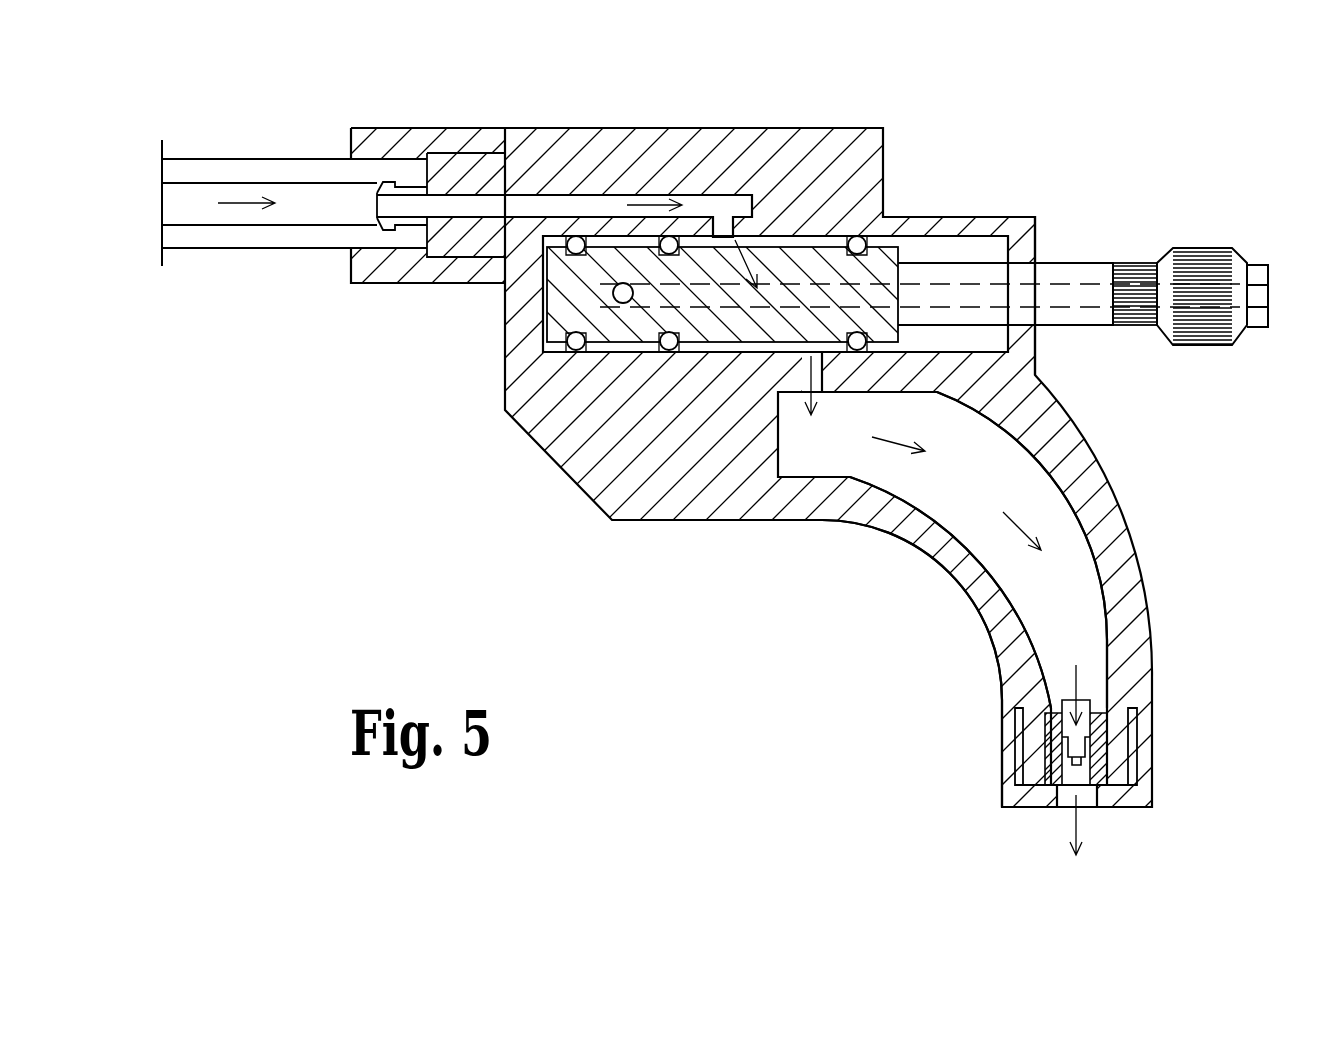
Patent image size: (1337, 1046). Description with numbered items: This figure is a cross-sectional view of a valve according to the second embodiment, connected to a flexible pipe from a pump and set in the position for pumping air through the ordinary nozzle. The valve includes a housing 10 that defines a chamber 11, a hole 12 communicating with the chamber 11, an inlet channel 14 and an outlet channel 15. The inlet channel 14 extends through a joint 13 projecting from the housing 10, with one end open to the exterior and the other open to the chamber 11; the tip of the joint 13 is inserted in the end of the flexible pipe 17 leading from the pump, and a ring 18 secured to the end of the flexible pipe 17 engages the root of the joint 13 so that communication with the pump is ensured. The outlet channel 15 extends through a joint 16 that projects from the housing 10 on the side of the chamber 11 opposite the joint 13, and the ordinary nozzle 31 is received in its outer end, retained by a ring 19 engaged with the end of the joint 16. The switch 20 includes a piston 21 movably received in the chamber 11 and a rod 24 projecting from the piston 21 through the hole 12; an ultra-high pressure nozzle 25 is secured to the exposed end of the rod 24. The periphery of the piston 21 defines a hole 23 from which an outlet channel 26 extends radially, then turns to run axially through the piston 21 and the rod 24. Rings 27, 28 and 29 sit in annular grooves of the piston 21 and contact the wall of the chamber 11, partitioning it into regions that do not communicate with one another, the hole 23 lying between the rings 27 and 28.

The housing 10 is at (848, 547).
The chamber 11 is at (952, 255).
The hole 12 is at (1022, 265).
The joint 13 is at (455, 238).
The inlet channel 14 is at (571, 205).
The outlet channel 15 is at (960, 513).
The joint 16 is at (990, 612).
The flexible pipe 17 is at (201, 235).
The ring 18 is at (413, 270).
The ring 19 is at (1020, 800).
The switch 20 is at (1135, 362).
The piston 21 is at (700, 257).
The hole 23 is at (621, 303).
The rod 24 is at (1077, 275).
The ultra-high pressure nozzle 25 is at (1202, 262).
The outlet channel 26 is at (797, 290).
The ring 27 is at (574, 352).
The ring 28 is at (668, 350).
The ring 29 is at (858, 238).
The ordinary nozzle 31 is at (1103, 723).